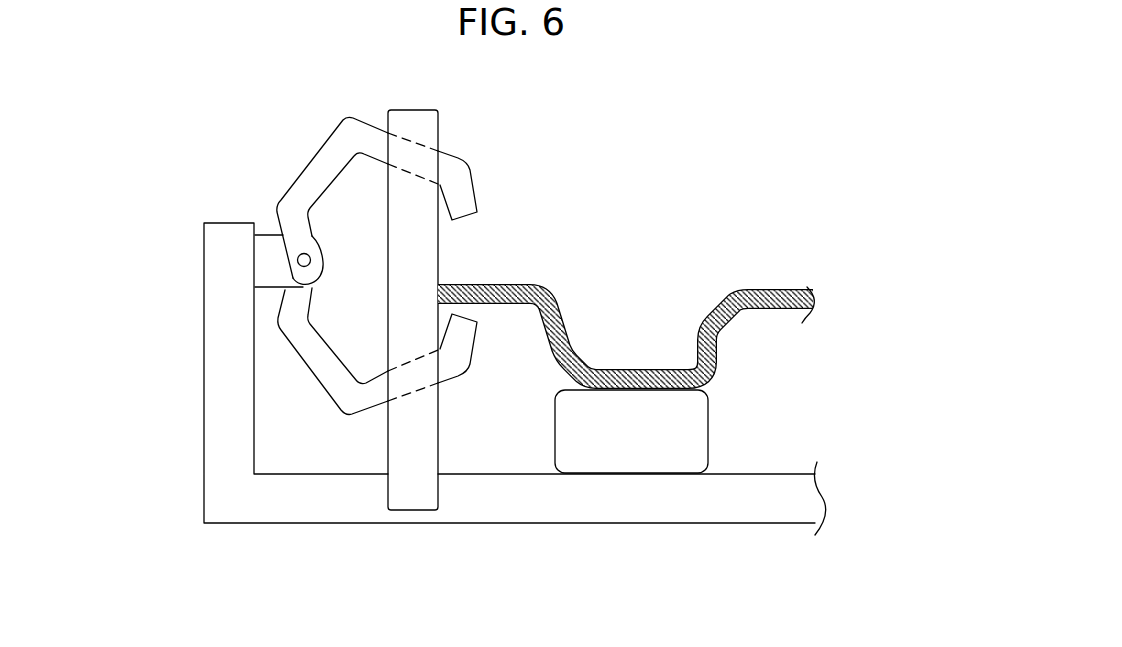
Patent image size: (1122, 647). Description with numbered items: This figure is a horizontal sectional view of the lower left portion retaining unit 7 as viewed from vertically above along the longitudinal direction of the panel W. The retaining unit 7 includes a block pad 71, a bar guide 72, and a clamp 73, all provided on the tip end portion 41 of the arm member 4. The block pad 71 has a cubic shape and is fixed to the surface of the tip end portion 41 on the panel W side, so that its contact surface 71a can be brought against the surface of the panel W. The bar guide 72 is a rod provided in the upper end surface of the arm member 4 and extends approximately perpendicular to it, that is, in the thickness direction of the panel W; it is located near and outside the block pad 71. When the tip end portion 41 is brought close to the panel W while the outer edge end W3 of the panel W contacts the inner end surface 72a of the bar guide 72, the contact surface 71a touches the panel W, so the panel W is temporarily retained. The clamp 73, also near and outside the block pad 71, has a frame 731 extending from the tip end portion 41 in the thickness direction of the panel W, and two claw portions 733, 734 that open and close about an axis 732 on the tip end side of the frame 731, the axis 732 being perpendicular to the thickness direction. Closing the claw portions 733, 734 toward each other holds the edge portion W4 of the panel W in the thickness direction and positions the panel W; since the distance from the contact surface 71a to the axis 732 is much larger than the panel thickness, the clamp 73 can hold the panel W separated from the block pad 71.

The lower left portion retaining unit 7 is at (272, 100).
The clamp 73 is at (282, 268).
The frame 731 is at (227, 318).
The axis 732 is at (315, 250).
The claw portion 733 is at (348, 117).
The claw portion 734 is at (353, 413).
The bar guide 72 is at (473, 289).
The inner end surface 72a is at (438, 233).
The block pad 71 is at (690, 435).
The contact surface 71a is at (707, 375).
The panel W is at (770, 288).
The outer edge end W3 is at (436, 286).
The edge portion W4 is at (502, 305).
The arm member 4 is at (515, 395).
The tip end portion 41 is at (478, 514).